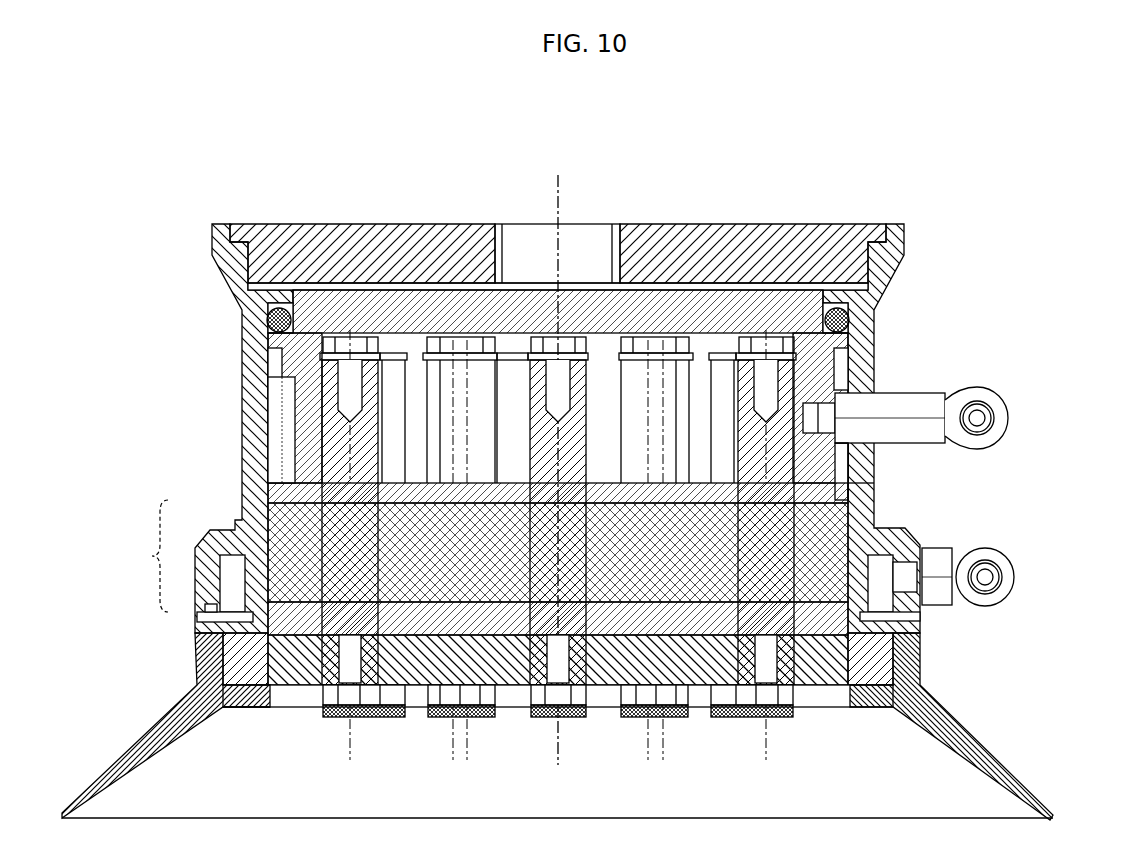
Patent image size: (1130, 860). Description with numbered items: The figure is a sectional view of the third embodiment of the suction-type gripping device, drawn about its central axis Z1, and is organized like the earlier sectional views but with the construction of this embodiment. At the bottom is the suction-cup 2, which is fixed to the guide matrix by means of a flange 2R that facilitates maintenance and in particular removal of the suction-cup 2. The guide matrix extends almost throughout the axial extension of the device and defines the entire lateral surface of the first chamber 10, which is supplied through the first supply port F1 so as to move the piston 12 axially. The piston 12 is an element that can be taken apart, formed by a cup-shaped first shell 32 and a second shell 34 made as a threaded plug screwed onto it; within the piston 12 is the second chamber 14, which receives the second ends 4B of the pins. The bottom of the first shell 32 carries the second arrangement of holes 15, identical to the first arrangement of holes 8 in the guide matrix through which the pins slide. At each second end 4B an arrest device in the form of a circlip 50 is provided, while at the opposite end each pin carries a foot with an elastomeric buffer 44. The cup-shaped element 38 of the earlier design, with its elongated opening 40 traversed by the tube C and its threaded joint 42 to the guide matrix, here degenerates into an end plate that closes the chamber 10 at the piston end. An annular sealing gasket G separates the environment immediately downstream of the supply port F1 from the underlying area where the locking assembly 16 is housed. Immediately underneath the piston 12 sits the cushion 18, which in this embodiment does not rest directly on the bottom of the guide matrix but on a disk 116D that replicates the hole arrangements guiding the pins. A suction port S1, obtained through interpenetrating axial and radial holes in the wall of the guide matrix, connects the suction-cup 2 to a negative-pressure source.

The suction-cup 2 is at (134, 745).
The flange 2R is at (920, 655).
The second end 4B is at (322, 330).
The first arrangement of holes 8 is at (318, 658).
The first chamber 10 is at (877, 290).
The piston 12 is at (828, 367).
The second chamber 14 is at (507, 338).
The second arrangement of holes 15 is at (587, 485).
The locking assembly 16 is at (518, 561).
The cushion 18 is at (830, 548).
The first shell 32 is at (285, 372).
The second shell 34 is at (302, 305).
The cup-shaped element 38 is at (383, 257).
The through opening 40 is at (868, 466).
The threaded joint 42 is at (330, 690).
The buffer 44 is at (365, 710).
The circlip 50 is at (362, 345).
The disk 116D is at (275, 627).
The tube C is at (925, 395).
The first supply port F1 is at (606, 240).
The annular sealing gasket G is at (852, 318).
The suction port S1 is at (1012, 578).
The center axis Z1 is at (566, 210).